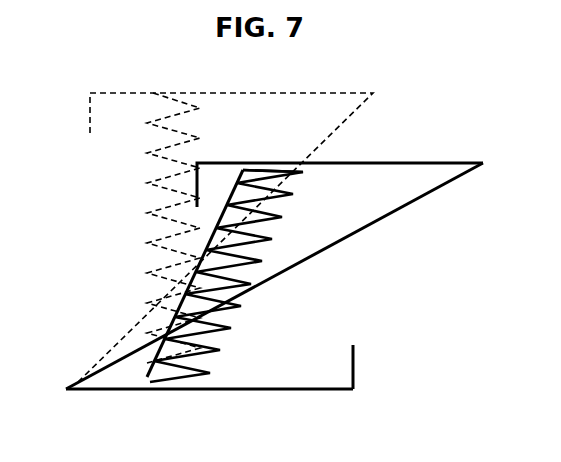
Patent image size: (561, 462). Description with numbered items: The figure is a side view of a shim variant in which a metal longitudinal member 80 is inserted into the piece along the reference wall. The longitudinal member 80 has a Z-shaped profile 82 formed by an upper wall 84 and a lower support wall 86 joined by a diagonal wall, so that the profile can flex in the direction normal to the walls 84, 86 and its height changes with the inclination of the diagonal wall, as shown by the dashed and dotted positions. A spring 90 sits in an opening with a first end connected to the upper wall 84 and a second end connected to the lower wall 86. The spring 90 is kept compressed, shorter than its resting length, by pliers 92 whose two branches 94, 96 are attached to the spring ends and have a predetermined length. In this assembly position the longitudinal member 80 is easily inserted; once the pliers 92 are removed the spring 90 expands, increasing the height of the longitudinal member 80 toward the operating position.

The longitudinal member 80 is at (442, 78).
The Z-shaped profile 82 is at (406, 222).
The upper wall 84 is at (404, 162).
The support wall 86 is at (323, 251).
The spring 90 is at (252, 305).
The pliers 92 is at (165, 396).
The branch 94 is at (152, 380).
The branch 96 is at (257, 164).